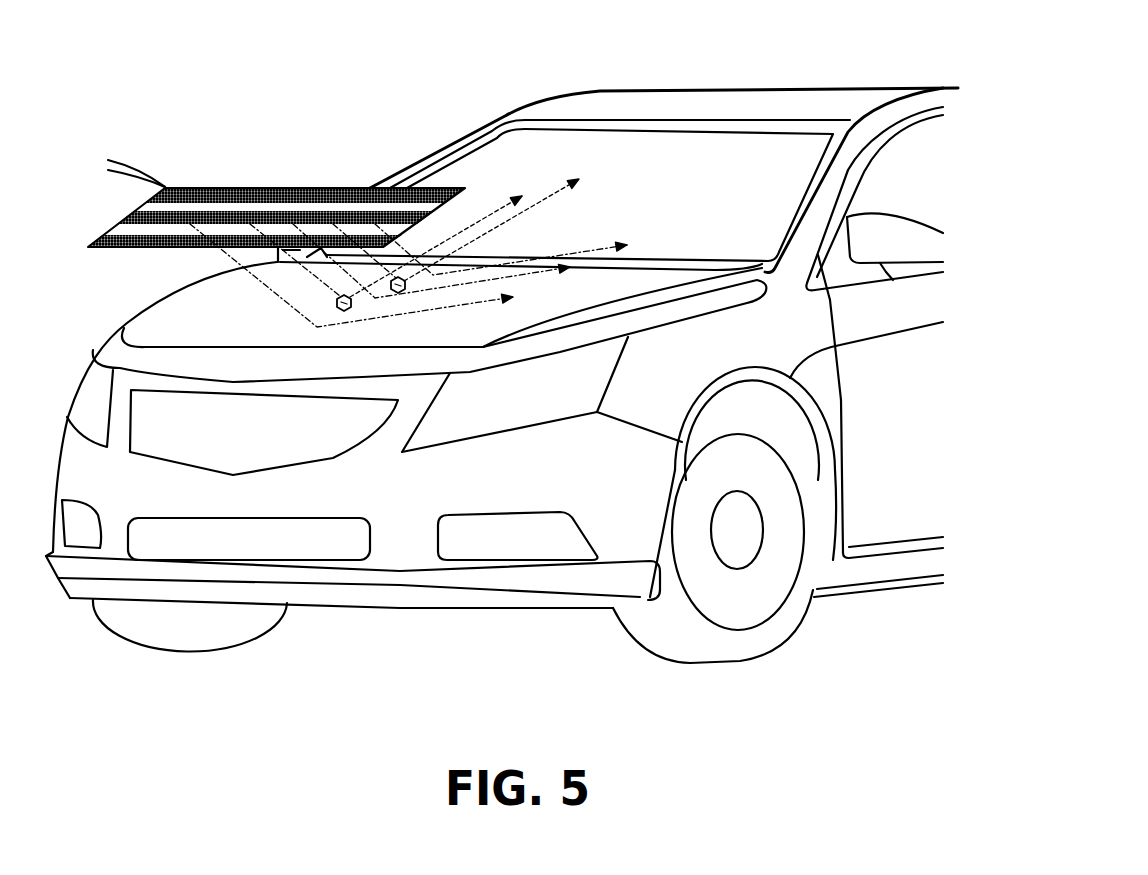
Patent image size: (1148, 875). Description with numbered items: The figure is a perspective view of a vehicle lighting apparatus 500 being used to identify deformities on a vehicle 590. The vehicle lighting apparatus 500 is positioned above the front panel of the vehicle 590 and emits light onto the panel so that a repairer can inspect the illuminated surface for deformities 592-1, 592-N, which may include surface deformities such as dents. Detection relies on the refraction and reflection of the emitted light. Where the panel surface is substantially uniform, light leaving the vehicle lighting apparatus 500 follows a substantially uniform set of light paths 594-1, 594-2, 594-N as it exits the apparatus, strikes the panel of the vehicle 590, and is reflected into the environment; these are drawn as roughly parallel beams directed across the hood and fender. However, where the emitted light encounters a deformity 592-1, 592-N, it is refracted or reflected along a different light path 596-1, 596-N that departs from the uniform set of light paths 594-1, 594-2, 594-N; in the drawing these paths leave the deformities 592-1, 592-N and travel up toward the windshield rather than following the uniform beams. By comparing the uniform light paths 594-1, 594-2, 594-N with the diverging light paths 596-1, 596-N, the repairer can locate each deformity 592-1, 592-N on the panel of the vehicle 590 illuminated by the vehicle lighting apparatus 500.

The vehicle lighting apparatus 500 is at (266, 188).
The vehicle 590 is at (788, 87).
The deformity 592-1 is at (344, 312).
The deformity 592-N is at (398, 294).
The light path 594-1 is at (471, 300).
The light path 594-2 is at (540, 274).
The light path 594-N is at (598, 254).
The different light path 596-1 is at (488, 212).
The different light path 596-N is at (560, 188).